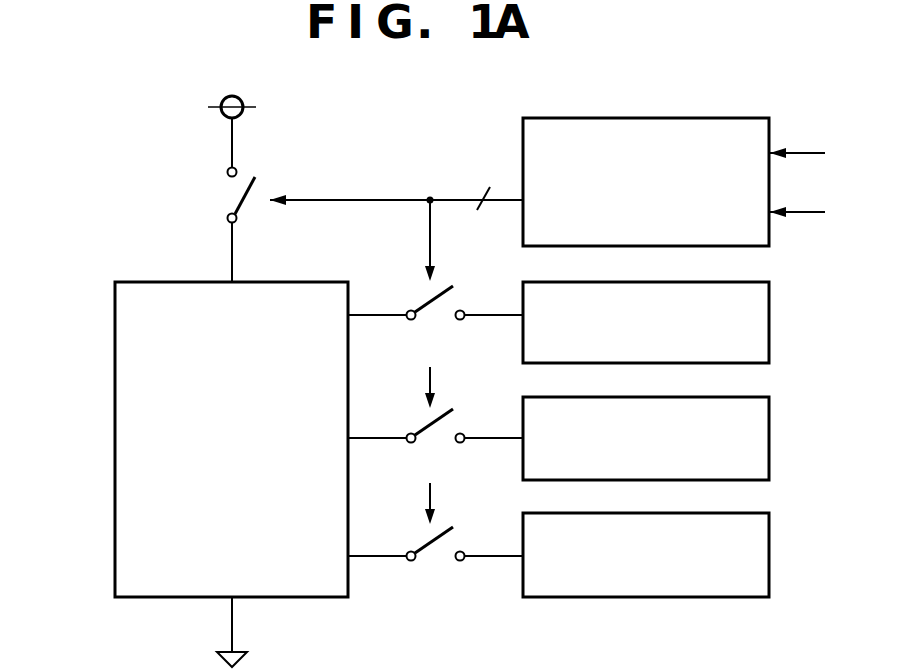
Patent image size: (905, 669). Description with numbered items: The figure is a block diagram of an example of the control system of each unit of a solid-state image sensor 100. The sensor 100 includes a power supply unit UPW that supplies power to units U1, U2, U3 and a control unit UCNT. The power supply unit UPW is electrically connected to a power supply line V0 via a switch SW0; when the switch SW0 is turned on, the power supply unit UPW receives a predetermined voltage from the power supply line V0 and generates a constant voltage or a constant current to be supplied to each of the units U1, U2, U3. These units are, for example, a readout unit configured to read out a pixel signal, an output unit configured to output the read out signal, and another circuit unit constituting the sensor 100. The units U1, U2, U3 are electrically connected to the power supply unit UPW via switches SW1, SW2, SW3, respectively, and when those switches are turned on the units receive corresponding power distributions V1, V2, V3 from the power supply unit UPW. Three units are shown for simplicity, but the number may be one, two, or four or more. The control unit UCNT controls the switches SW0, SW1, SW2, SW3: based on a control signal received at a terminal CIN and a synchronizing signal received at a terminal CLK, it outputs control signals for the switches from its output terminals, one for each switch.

The solid-state image sensor 100 is at (143, 112).
The power supply line V0 is at (221, 119).
The switch SW0 is at (209, 225).
The control unit UCNT is at (571, 117).
The terminal CIN is at (767, 157).
The terminal CLK is at (763, 212).
The power supply unit UPW is at (260, 474).
The power distribution V1 is at (354, 315).
The power distribution V2 is at (354, 440).
The power distribution V3 is at (354, 556).
The switch SW1 is at (465, 321).
The switch SW2 is at (465, 442).
The switch SW3 is at (465, 559).
The unit U1 is at (646, 322).
The unit U2 is at (646, 438).
The unit U3 is at (646, 555).